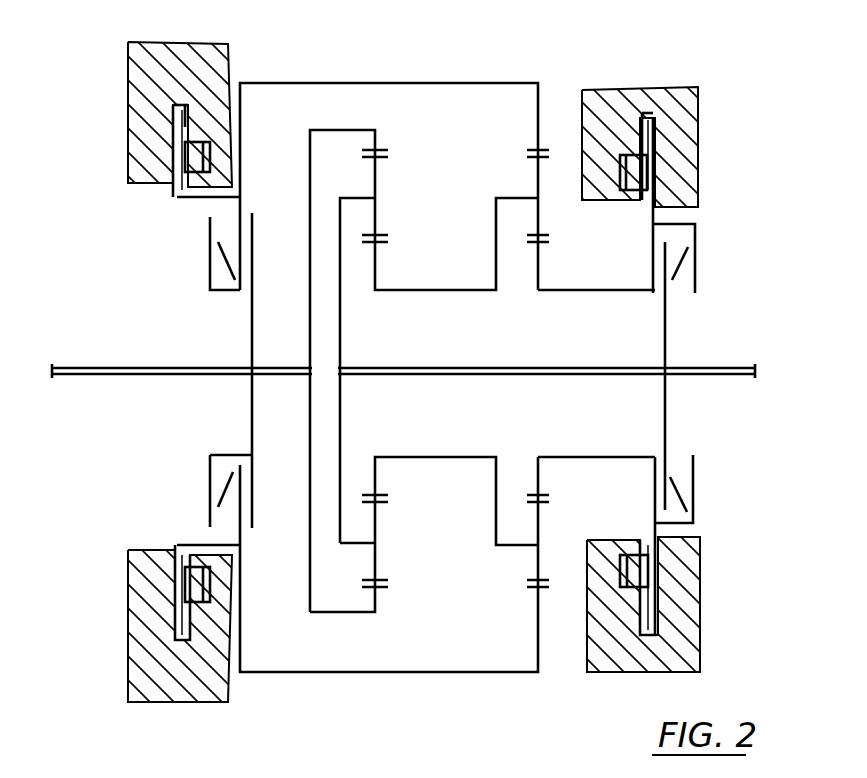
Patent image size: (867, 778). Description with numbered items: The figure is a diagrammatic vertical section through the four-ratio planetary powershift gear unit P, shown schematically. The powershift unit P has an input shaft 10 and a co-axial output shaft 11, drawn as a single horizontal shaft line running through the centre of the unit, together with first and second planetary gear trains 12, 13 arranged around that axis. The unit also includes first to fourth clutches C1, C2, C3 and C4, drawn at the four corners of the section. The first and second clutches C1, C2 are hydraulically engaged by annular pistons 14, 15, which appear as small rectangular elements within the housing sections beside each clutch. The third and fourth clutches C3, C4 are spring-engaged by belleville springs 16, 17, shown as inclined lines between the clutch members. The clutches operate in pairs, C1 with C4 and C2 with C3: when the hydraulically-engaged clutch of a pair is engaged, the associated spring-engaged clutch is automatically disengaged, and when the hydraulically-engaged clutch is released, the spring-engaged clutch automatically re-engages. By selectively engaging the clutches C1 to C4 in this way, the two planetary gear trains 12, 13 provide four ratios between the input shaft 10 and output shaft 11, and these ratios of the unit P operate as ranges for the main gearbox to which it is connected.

The input shaft 10 is at (92, 366).
The output shaft 11 is at (720, 366).
The first planetary gear train 12 is at (359, 630).
The second planetary gear train 13 is at (551, 624).
The annular piston 14 is at (190, 157).
The annular piston 15 is at (642, 172).
The belleville spring 16 is at (217, 255).
The belleville spring 17 is at (675, 268).
The first clutch C1 is at (196, 104).
The second clutch C2 is at (633, 102).
The third clutch C3 is at (703, 483).
The fourth clutch C4 is at (212, 489).
The powershift unit P is at (736, 569).